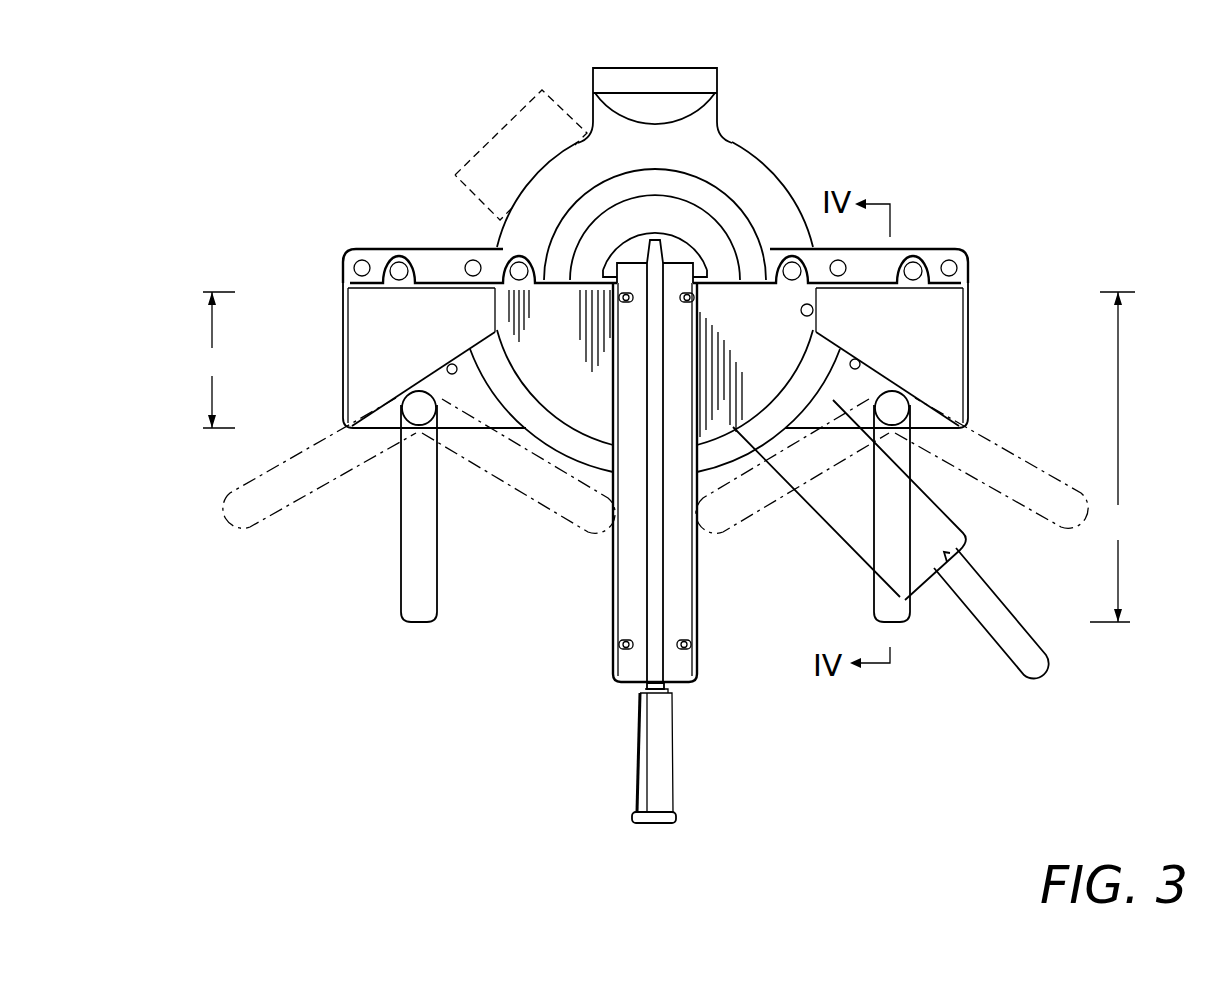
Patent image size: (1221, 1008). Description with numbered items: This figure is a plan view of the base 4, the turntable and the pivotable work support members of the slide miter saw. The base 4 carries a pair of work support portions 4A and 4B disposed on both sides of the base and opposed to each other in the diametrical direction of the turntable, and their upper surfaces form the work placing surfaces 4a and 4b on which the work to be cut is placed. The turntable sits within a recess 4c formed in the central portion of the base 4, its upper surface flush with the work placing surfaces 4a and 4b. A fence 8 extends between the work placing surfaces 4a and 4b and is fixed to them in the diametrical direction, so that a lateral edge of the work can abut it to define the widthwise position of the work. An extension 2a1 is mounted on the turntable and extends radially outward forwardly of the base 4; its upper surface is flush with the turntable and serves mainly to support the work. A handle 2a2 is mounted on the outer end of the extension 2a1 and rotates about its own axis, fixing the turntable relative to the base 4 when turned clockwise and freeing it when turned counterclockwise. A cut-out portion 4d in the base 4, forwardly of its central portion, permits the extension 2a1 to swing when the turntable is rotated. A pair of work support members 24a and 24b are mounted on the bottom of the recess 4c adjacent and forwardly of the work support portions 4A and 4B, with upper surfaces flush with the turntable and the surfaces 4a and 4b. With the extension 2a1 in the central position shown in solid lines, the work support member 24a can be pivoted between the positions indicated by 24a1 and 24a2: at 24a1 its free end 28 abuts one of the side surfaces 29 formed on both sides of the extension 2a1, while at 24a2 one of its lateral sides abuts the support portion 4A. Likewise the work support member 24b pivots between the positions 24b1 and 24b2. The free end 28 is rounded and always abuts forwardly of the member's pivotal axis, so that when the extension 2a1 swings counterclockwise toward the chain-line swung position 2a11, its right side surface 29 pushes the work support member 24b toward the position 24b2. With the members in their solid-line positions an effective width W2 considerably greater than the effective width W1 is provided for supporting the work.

The fence 8 is at (440, 249).
The base 4 is at (342, 347).
The work support portion 4A is at (353, 307).
The work support portion 4B is at (955, 300).
The work placing surface 4a is at (372, 373).
The work placing surface 4b is at (962, 338).
The recess 4c is at (813, 309).
The cut-out portion 4d is at (448, 368).
The work support member 24a is at (417, 623).
The work support member 24b is at (908, 618).
The position of work support member 24a 24a1 is at (527, 480).
The position of work support member 24a 24a2 is at (297, 500).
The position of work support member 24b 24b1 is at (757, 498).
The position of work support member 24b 24b2 is at (1007, 453).
The free end 28 is at (413, 603).
The side surface 29 is at (612, 583).
The extension 2a1 is at (612, 602).
The handle holder arm 2a11 is at (837, 532).
The handle 2a2 is at (637, 753).
The effective width W1 is at (214, 360).
The effective width W2 is at (1116, 457).